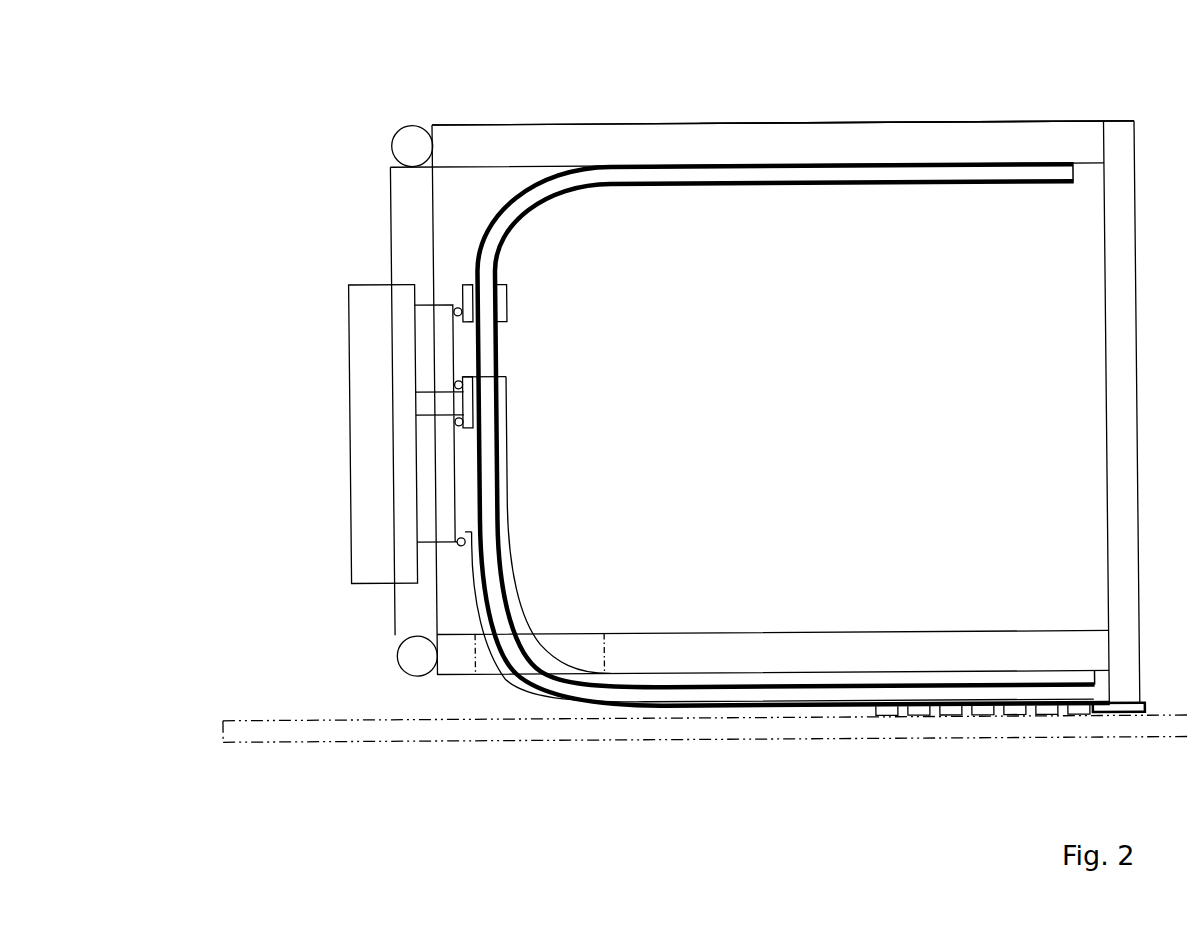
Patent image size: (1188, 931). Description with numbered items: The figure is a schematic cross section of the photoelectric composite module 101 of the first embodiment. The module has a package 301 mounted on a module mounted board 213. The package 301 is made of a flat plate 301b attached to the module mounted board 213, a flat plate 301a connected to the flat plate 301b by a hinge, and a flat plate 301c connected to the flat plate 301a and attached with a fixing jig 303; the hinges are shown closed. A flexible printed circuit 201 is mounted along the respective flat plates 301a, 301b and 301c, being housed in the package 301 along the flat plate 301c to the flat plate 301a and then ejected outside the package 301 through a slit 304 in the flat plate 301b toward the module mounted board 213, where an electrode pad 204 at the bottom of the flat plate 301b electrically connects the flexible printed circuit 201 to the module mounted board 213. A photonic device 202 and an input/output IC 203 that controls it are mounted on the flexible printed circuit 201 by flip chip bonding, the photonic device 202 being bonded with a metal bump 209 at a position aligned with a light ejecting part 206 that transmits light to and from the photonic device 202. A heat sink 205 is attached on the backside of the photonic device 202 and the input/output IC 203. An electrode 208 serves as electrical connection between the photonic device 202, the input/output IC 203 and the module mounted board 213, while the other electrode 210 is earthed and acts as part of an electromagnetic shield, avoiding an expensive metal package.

The photoelectric composite module 101 is at (868, 100).
The flexible printed circuit 201 is at (762, 189).
The photonic device 202 is at (435, 308).
The input/output IC 203 is at (438, 538).
The electrode pad 204 is at (950, 712).
The heat sink 205 is at (350, 493).
The light ejecting part 206 is at (497, 330).
The electrode 208 is at (670, 705).
The metal bump 209 is at (458, 381).
The electrode 210 is at (505, 445).
The module mounted board 213 is at (477, 743).
The package 301 is at (685, 135).
The flat plate 301a is at (392, 192).
The flat plate 301b is at (860, 633).
The flat plate 301c is at (572, 124).
The fixing jig 303 is at (1103, 328).
The slit 304 is at (603, 636).